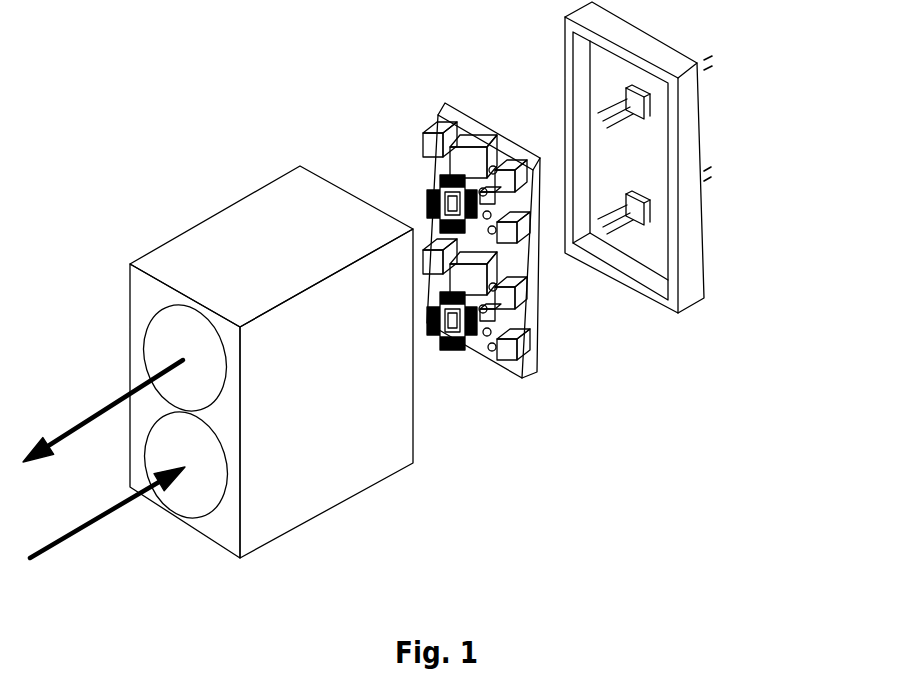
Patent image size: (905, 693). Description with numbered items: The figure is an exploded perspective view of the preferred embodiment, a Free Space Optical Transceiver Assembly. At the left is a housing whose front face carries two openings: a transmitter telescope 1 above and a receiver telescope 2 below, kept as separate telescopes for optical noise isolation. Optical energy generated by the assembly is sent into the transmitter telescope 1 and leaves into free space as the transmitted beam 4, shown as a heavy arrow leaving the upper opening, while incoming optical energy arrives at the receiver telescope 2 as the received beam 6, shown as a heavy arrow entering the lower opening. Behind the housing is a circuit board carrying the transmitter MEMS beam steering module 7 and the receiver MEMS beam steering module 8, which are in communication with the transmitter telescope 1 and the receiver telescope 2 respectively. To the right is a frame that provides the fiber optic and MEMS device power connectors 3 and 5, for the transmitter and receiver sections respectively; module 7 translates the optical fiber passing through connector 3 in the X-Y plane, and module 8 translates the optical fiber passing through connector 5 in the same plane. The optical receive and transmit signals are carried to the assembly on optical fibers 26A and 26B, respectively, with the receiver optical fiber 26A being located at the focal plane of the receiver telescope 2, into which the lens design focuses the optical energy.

The transmitter telescope 1 is at (153, 307).
The receiver telescope 2 is at (228, 498).
The fiber optic and MEMS device power connector 3 is at (713, 65).
The transmitted beam 4 is at (82, 415).
The fiber optic and MEMS device power connector 5 is at (725, 170).
The received beam 6 is at (110, 518).
The transmitter MEMS beam steering module 7 is at (421, 176).
The receiver MEMS beam steering module 8 is at (401, 262).
The receiver optical fiber 26A is at (657, 228).
The transmitter optical fiber 26B is at (592, 103).